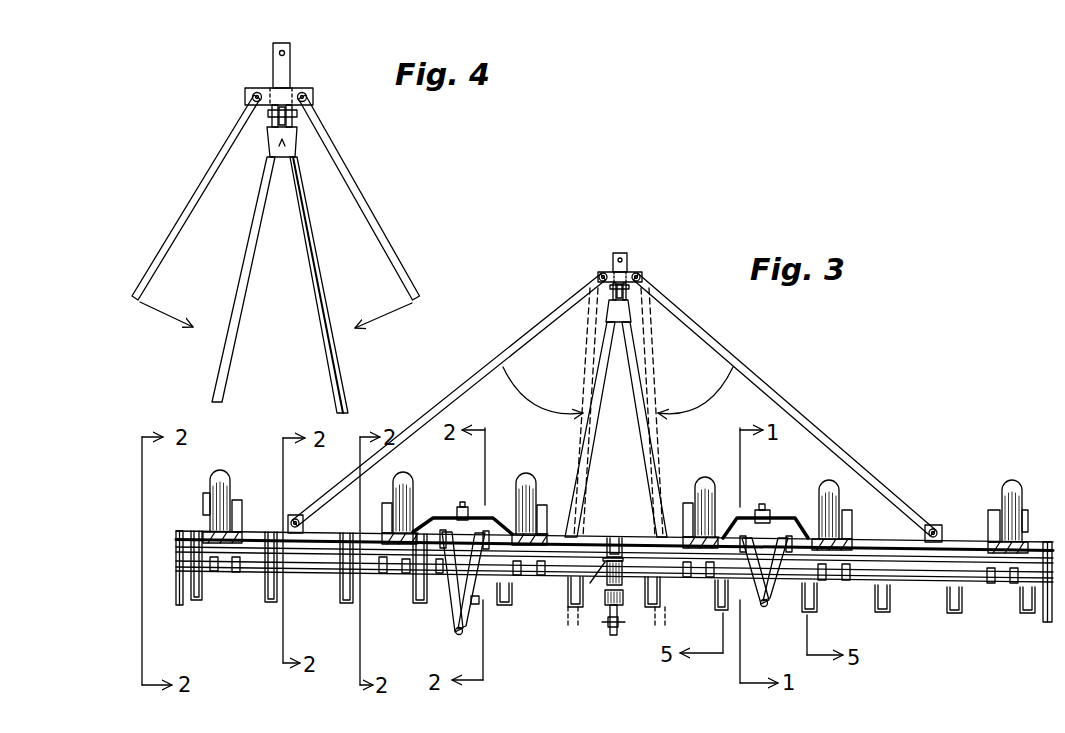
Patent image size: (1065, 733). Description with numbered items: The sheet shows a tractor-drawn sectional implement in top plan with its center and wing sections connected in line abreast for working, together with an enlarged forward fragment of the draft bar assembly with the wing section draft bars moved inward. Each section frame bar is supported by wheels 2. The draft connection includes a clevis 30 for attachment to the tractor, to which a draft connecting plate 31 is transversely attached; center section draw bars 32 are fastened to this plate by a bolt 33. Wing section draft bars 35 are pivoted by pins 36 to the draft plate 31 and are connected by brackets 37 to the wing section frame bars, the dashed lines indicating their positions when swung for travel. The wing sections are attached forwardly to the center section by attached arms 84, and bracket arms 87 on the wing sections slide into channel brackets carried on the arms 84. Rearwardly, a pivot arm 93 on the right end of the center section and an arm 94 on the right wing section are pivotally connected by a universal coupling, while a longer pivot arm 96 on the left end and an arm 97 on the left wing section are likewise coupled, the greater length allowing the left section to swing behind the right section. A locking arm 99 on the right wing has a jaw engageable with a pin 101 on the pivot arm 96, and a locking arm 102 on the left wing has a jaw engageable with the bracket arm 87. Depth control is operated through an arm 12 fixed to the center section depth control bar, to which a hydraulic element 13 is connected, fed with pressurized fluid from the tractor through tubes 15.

In FIG. 3, the wheels 2 is at (531, 490).
In FIG. 3, the arm 12 is at (615, 540).
In FIG. 3, the hydraulic element 13 is at (605, 610).
In FIG. 3, the tubes 15 is at (625, 626).
In FIG. 4, the clevis 30 is at (284, 67).
In FIG. 3, the clevis 30 is at (612, 260).
In FIG. 4, the draft connecting plate 31 is at (314, 89).
In FIG. 4, the center section draw bars 32 is at (318, 323).
In FIG. 3, the center section draw bars 32 is at (644, 465).
In FIG. 4, the bolt 33 is at (300, 112).
In FIG. 4, the wing section draft bars 35 is at (203, 183).
In FIG. 3, the wing section draft bars 35 is at (597, 307).
In FIG. 4, the pins 36 is at (252, 97).
In FIG. 3, the brackets 37 is at (293, 515).
In FIG. 3, the attached arms 84 is at (730, 513).
In FIG. 3, the bracket arms 87 is at (430, 530).
In FIG. 3, the pivot arm 93 is at (760, 584).
In FIG. 3, the arm 94 is at (771, 594).
In FIG. 3, the pivot arm 96 is at (467, 610).
In FIG. 3, the arm 97 is at (453, 613).
In FIG. 3, the locking arm 99 is at (1042, 620).
In FIG. 3, the pin 101 is at (476, 601).
In FIG. 3, the locking arm 102 is at (227, 648).